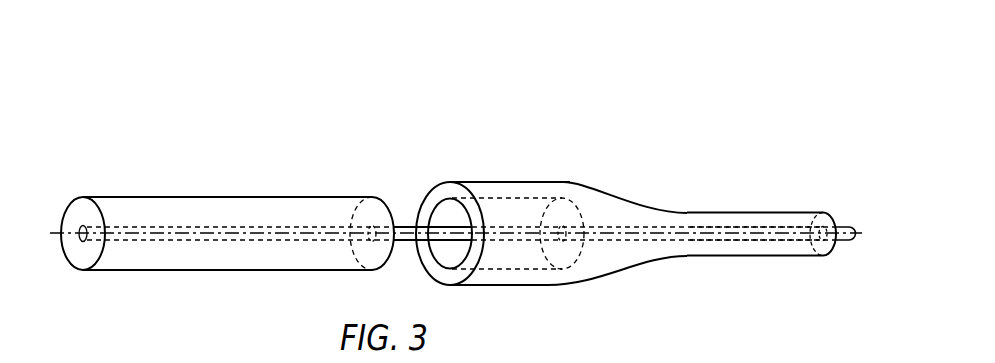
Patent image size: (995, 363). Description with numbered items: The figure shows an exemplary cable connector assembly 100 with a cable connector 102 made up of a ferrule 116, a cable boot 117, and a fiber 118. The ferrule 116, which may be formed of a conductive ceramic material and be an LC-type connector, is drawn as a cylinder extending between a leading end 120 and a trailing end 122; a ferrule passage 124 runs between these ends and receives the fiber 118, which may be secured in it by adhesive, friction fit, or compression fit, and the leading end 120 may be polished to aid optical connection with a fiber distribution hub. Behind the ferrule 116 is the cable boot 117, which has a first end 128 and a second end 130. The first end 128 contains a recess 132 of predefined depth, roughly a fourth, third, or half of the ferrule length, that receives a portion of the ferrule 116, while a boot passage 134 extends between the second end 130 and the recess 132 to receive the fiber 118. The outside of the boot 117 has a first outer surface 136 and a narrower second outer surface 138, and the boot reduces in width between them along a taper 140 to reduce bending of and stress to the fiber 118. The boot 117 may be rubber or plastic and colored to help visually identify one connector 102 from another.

The fiber optic connector assembly 100 is at (656, 58).
The cable connector 102 is at (626, 211).
The ferrule 116 is at (240, 228).
The cable boot 117 is at (561, 181).
The fiber 118 is at (845, 247).
The leading end 120 is at (80, 210).
The trailing end 122 is at (387, 202).
The ferrule passage 124 is at (84, 242).
The first end 128 is at (448, 190).
The second end 130 is at (833, 213).
The recess 132 is at (513, 270).
The boot passage 134 is at (673, 240).
The first outer surface 136 is at (504, 182).
The second outer surface 138 is at (735, 212).
The taper 140 is at (642, 203).